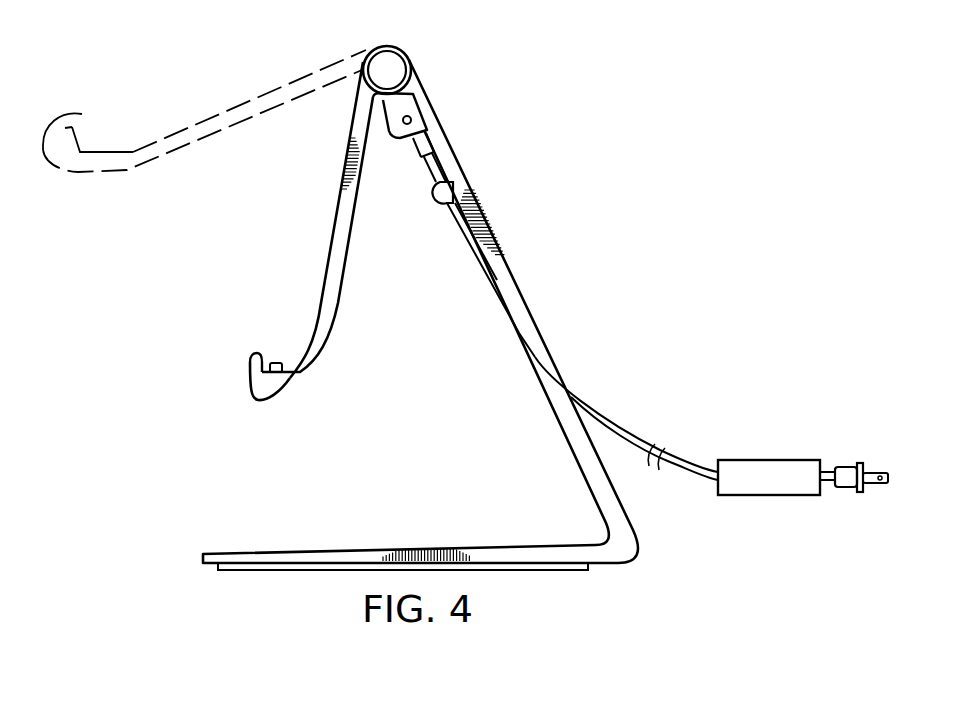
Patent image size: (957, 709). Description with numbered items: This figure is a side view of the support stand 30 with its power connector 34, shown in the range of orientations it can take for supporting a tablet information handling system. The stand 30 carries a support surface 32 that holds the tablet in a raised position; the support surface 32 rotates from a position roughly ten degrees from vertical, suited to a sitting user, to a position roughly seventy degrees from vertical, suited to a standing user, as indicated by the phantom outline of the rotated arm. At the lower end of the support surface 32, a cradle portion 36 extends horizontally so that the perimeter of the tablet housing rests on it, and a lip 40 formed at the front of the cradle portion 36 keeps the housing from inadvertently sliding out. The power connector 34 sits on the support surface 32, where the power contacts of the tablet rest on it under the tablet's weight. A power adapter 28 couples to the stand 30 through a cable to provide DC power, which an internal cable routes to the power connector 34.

The power adapter 28 is at (785, 497).
The support stand 30 is at (340, 308).
The support surface 32 is at (335, 205).
The power connector 34 is at (276, 362).
The cradle portion 36 is at (264, 402).
The lip 40 is at (254, 353).